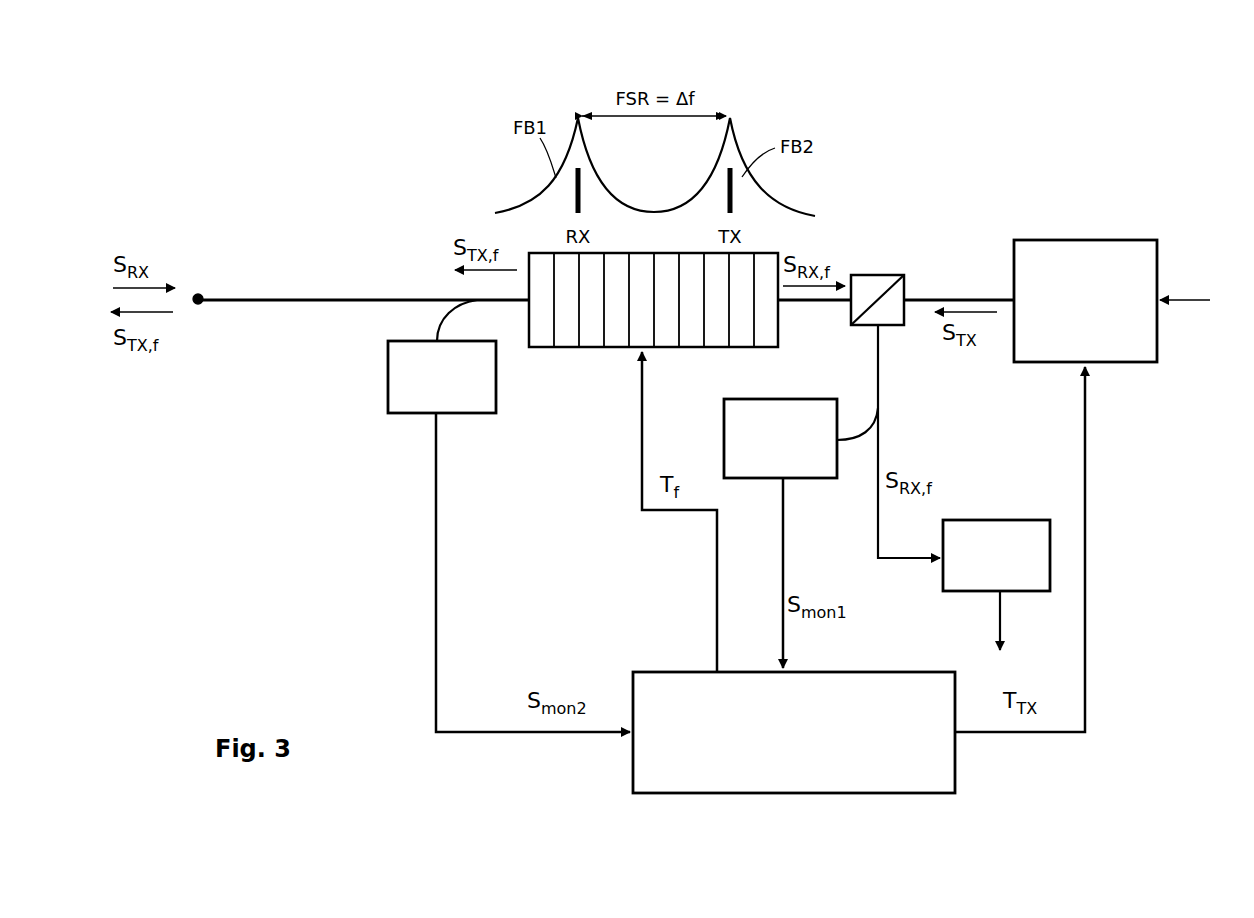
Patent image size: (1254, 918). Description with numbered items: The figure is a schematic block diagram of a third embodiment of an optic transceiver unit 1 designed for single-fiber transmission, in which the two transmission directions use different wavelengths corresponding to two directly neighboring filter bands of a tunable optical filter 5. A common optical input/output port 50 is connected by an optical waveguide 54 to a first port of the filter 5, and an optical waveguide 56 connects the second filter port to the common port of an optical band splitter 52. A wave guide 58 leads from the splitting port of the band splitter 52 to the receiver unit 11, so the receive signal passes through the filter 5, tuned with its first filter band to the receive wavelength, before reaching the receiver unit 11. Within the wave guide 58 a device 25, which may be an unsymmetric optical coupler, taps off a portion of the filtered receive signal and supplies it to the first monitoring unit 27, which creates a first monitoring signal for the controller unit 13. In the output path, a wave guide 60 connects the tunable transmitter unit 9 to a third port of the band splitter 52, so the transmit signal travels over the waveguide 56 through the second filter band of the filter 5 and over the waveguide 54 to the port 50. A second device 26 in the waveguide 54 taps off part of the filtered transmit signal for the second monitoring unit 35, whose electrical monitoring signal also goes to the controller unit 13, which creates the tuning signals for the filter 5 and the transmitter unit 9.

The transceiver unit 1 is at (892, 157).
The tunable optical filter 5 is at (619, 337).
The tunable transmitter unit 9 is at (1135, 240).
The receiver unit 11 is at (993, 527).
The controller unit 13 is at (820, 775).
The device for tapping off a portion of the filtered optical signal 25 is at (888, 405).
The second device for tapping off a portion of the filtered transmit signal 26 is at (457, 317).
The first monitoring unit 27 is at (808, 465).
The second monitoring unit 35 is at (474, 404).
The common optical input/output port 50 is at (200, 291).
The optical band splitter 52 is at (879, 274).
The optical waveguide 54 is at (353, 297).
The optical waveguide 56 is at (818, 303).
The wave guide 58 is at (880, 443).
The wave guide 60 is at (957, 298).